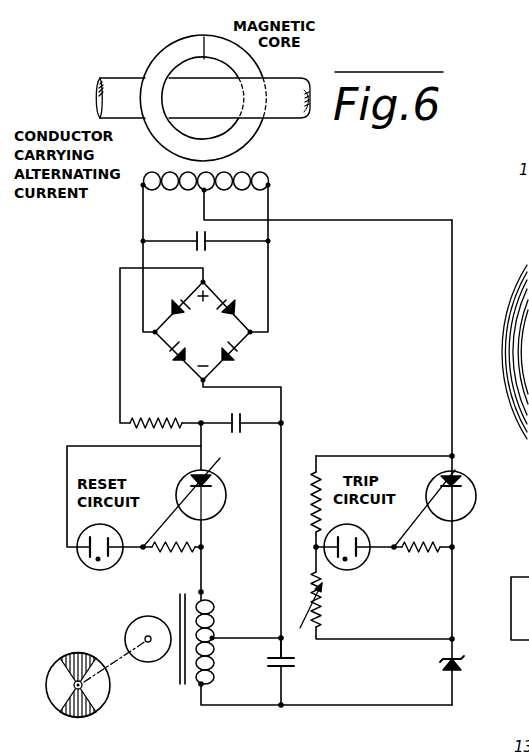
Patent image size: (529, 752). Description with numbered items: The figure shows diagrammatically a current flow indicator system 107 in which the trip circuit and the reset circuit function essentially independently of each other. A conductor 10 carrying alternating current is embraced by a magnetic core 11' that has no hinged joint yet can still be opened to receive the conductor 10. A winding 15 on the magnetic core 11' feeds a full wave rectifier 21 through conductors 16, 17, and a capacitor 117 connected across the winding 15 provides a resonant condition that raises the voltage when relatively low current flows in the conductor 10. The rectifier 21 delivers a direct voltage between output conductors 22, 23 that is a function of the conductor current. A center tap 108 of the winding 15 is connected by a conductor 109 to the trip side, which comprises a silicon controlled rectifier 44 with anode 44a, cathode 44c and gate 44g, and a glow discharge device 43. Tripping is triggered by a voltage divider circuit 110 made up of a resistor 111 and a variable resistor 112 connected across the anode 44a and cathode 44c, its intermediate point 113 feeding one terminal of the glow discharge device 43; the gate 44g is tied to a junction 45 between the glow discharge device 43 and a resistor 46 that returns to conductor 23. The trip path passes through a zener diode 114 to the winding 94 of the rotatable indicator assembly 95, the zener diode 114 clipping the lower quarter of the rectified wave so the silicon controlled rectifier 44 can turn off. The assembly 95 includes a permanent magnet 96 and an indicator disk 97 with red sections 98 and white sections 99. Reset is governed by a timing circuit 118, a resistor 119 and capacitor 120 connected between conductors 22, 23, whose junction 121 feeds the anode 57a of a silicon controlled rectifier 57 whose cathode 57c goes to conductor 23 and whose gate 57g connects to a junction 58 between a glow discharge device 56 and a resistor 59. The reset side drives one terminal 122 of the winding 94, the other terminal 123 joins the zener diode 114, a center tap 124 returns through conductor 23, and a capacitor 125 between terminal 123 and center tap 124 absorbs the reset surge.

The conductor 10 is at (120, 78).
The magnetic core 11' is at (185, 84).
The winding 15 is at (246, 172).
The conductor 16 is at (140, 224).
The conductor 17 is at (271, 203).
The full wave rectifier 21 is at (248, 279).
The conductor 22 is at (120, 316).
The conductor 23 is at (283, 401).
The glow discharge device 43 is at (363, 533).
The silicon controlled rectifier 44 is at (448, 491).
The anode 44a is at (462, 488).
The cathode 44c is at (460, 514).
The gate 44g is at (432, 488).
The junction 45 is at (418, 553).
The resistor 46 is at (430, 556).
The glow discharge device 56 is at (78, 560).
The silicon controlled rectifier 57 is at (204, 507).
The anode 57a is at (206, 476).
The cathode 57c is at (211, 512).
The gate 57g is at (184, 495).
The junction 58 is at (138, 552).
The resistor 59 is at (170, 556).
The winding 94 is at (212, 608).
The rotatable indicator assembly 95 is at (90, 673).
The permanent magnet 96 is at (136, 620).
The indicator disk 97 is at (104, 700).
The red sections 98 is at (80, 658).
The white sections 99 is at (48, 694).
The current flow indicator system 107 is at (391, 212).
The center tap 108 is at (206, 192).
The conductor 109 is at (452, 282).
The voltage divider circuit 110 is at (298, 462).
The resistor 111 is at (320, 478).
The variable resistor 112 is at (320, 626).
The intermediate point 113 is at (318, 570).
The zener diode 114 is at (436, 665).
The capacitor 117 is at (199, 232).
The timing circuit 118 is at (176, 412).
The resistor 119 is at (130, 423).
The capacitor 120 is at (234, 414).
The junction 121 is at (210, 411).
The terminal 122 is at (203, 590).
The terminal 123 is at (204, 686).
The center tap 124 is at (214, 636).
The capacitor 125 is at (293, 664).